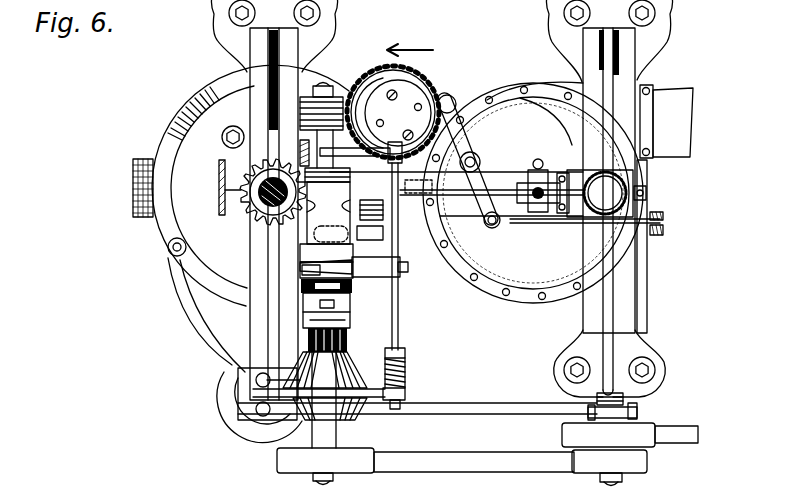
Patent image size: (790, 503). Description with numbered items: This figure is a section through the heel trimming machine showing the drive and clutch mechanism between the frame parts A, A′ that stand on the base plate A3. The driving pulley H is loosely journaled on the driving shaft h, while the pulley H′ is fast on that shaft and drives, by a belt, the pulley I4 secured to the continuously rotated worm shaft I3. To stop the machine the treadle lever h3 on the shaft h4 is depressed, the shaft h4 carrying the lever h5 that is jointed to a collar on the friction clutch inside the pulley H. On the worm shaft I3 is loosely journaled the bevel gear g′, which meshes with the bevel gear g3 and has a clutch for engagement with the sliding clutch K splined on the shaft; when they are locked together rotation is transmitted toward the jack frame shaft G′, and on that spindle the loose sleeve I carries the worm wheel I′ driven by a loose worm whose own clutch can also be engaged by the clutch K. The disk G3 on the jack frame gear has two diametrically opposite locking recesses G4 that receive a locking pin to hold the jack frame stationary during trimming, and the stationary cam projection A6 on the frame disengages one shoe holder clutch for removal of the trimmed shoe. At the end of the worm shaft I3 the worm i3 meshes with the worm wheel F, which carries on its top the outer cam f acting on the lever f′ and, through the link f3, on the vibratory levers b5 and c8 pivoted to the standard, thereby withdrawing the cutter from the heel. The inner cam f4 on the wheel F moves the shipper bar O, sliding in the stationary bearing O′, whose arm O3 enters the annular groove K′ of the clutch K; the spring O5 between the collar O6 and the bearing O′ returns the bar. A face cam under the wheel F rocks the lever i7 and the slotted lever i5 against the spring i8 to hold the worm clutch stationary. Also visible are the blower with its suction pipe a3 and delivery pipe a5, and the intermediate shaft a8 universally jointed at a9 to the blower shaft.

The frame or base part A is at (273, 214).
The frame or base part A′ is at (615, 211).
The base plate A3 is at (672, 365).
The stationary cam projection A6 is at (217, 195).
The jack frame shaft G′ is at (256, 212).
The locking disk G3 is at (154, 188).
The locking recess G4 is at (168, 249).
The sleeve I is at (250, 168).
The worm wheel I′ is at (266, 160).
The worm shaft I3 is at (327, 80).
The pulley I4 is at (325, 466).
The worm i3 is at (313, 111).
The slotted lever i5 is at (385, 236).
The lever i7 is at (430, 188).
The spring i8 is at (385, 212).
The worm wheel F is at (367, 76).
The outer cam f is at (410, 70).
The lever f′ is at (463, 132).
The link f3 is at (572, 218).
The inner cam f4 is at (393, 113).
The shipper bar O is at (398, 314).
The stationary bearing O′ is at (405, 396).
The arm or projection O3 is at (405, 268).
The spring O5 is at (405, 369).
The collar O6 is at (405, 350).
The sliding clutch K is at (352, 279).
The annular groove K′ is at (301, 268).
The bevel gear g′ is at (348, 338).
The bevel gear g3 is at (352, 362).
The suction pipe a3 is at (606, 193).
The delivery pipe a5 is at (666, 121).
The intermediate shaft a8 is at (552, 166).
The universal joint a9 is at (522, 212).
The vibratory lever b5 is at (663, 216).
The vibratory lever c8 is at (663, 230).
The driving shaft h is at (620, 481).
The treadle lever h3 is at (178, 314).
The shaft h4 is at (464, 410).
The lever h5 is at (640, 412).
The driving pulley H is at (630, 435).
The pulley H′ is at (609, 461).